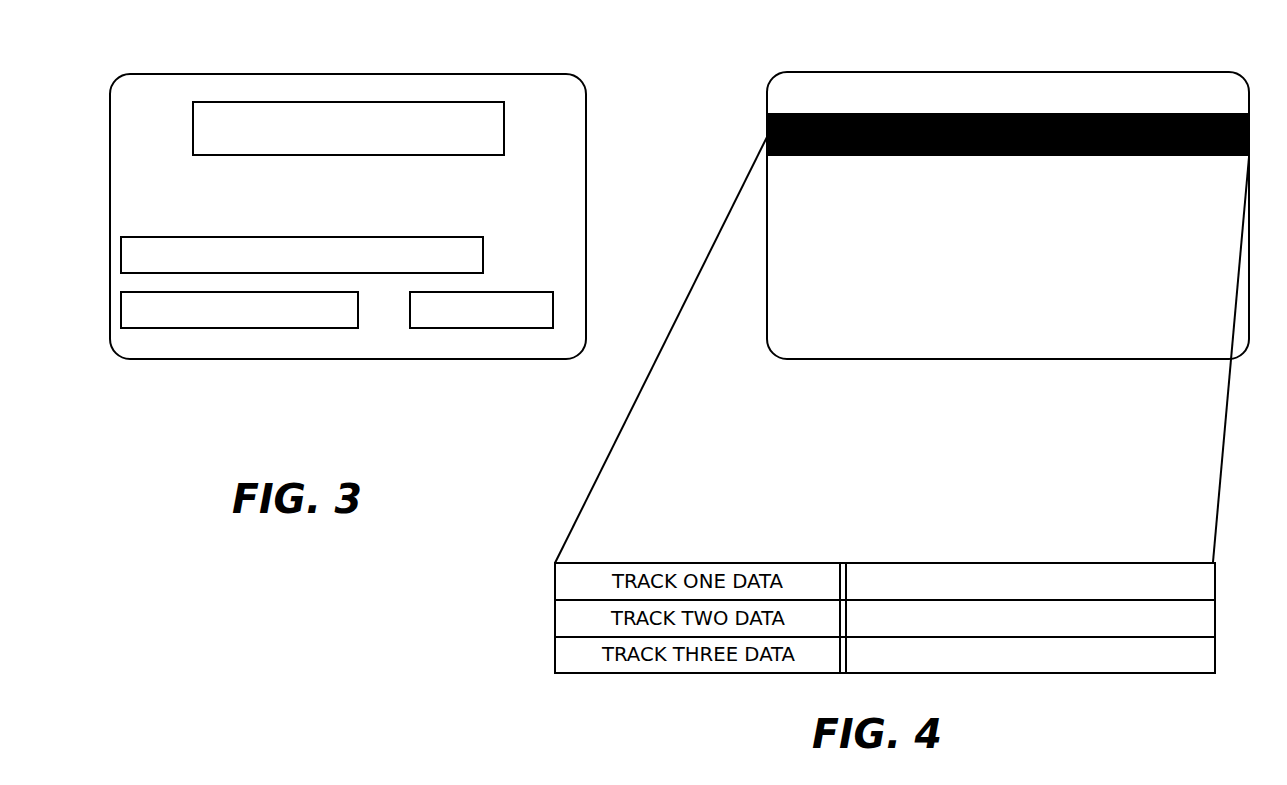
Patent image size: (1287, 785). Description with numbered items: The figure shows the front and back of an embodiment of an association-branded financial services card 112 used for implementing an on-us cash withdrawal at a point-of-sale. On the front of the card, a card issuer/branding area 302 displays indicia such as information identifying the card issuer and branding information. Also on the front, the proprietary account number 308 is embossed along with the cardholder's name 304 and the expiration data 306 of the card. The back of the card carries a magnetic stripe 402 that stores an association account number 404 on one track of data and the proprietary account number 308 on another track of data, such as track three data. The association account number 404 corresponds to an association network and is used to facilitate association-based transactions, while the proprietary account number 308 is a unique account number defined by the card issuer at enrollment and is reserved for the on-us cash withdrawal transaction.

In FIG. 3, the financial services card 112 is at (123, 411).
In FIG. 4, the financial services card 112 is at (721, 68).
In FIG. 3, the card issuer/branding 302 is at (505, 128).
In FIG. 3, the cardholder's name 304 is at (241, 328).
In FIG. 3, the expiration data 306 is at (483, 328).
In FIG. 3, the proprietary account number 308 is at (302, 237).
In FIG. 4, the proprietary account number 308 is at (1188, 667).
In FIG. 4, the magnetic stripe 402 is at (1007, 156).
In FIG. 4, the association account number 404 is at (1188, 593).